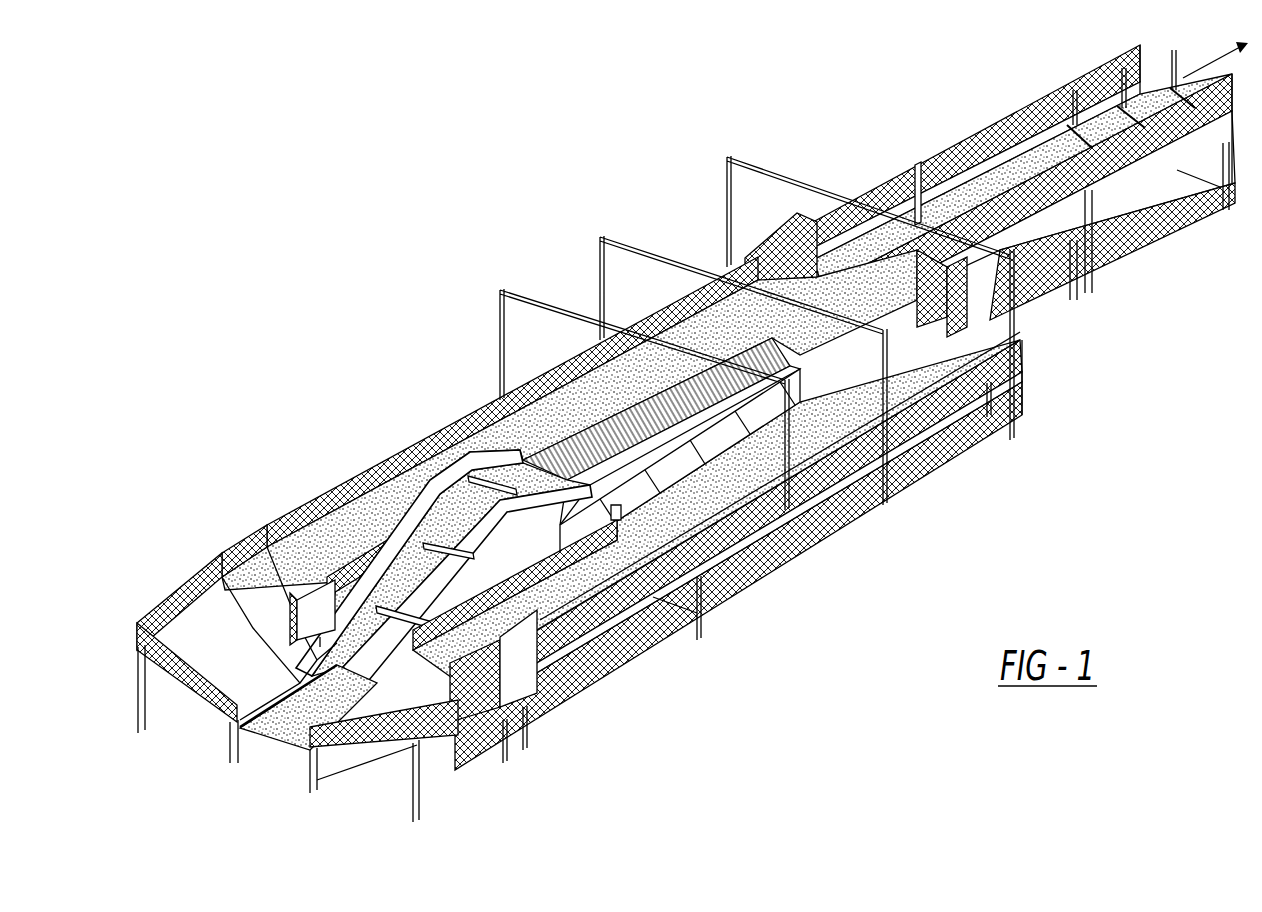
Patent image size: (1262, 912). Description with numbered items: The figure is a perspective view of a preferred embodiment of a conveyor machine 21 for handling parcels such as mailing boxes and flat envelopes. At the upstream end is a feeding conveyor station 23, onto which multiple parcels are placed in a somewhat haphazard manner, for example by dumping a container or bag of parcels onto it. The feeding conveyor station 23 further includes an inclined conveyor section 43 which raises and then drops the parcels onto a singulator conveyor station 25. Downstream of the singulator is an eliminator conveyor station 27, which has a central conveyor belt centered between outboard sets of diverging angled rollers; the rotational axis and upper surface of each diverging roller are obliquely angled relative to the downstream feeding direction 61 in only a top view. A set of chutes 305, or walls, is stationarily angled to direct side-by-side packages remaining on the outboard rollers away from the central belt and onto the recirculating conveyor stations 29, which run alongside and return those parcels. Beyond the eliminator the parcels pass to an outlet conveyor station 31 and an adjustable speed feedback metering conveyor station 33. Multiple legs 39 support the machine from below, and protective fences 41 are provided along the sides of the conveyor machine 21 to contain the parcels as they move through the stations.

The conveyor machine 21 is at (661, 138).
The feeding conveyor station 23 is at (290, 723).
The singulator conveyor station 25 is at (557, 475).
The eliminator conveyor station 27 is at (643, 405).
The recirculating conveyor stations 29 is at (327, 557).
The outlet conveyor station 31 is at (970, 203).
The adjustable speed feedback metering conveyor station 33 is at (1090, 137).
The legs 39 is at (715, 620).
The protective fences 41 is at (152, 612).
The inclined conveyor section 43 is at (428, 573).
The downstream feeding direction 61 is at (1213, 56).
The chutes 305 is at (803, 407).